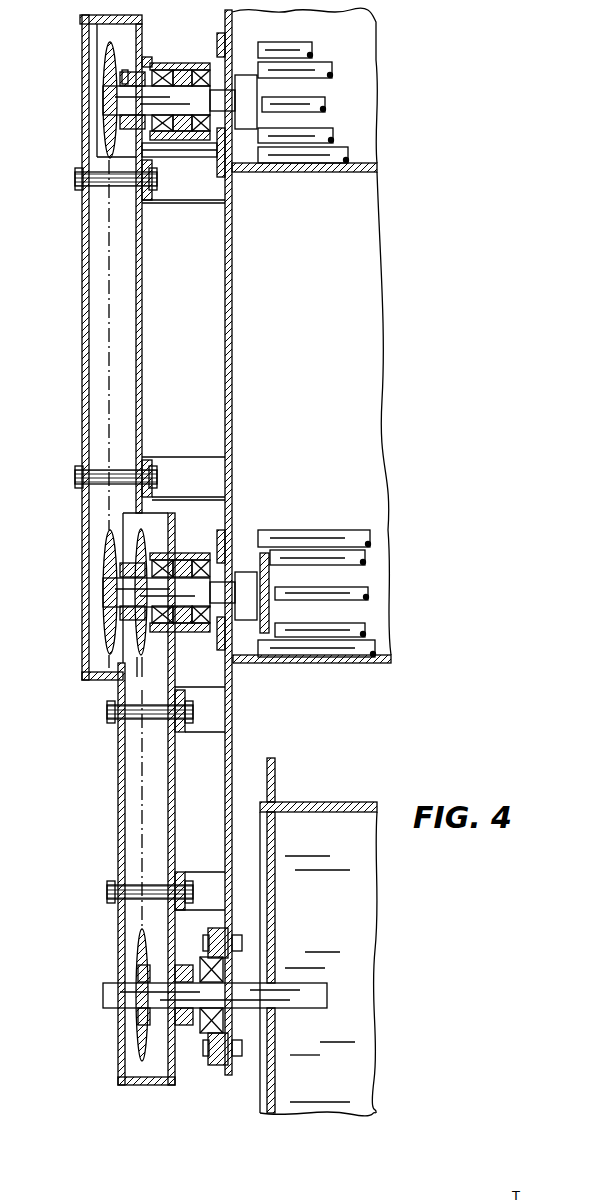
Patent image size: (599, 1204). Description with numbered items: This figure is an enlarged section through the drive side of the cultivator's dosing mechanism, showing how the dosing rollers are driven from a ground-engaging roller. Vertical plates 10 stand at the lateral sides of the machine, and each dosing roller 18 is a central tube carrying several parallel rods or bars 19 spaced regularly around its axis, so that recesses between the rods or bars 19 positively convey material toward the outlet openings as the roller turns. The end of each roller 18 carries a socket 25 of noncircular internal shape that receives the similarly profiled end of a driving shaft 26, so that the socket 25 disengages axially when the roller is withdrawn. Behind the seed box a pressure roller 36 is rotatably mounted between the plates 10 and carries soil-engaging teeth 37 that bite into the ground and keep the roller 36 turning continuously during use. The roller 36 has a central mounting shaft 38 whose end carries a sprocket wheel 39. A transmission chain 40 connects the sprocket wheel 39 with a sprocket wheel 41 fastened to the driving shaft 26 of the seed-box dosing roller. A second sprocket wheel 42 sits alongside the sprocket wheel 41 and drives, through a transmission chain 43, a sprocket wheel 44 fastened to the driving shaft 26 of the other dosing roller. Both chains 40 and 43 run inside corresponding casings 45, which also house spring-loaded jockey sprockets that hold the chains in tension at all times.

The vertical plate 10 is at (232, 258).
The dosing roller 18 is at (326, 57).
The rods or bars 19 is at (330, 131).
The socket 25 is at (244, 75).
The driving shaft 26 is at (103, 100).
The pressure roller 36 is at (340, 800).
The soil-engaging teeth 37 is at (273, 758).
The central mounting shaft 38 is at (322, 1000).
The sprocket wheel 39 is at (140, 1020).
The transmission chain 40 is at (140, 740).
The sprocket wheel 41 is at (147, 550).
The second sprocket wheel 42 is at (103, 547).
The transmission chain 43 is at (108, 305).
The sprocket wheel 44 is at (103, 62).
The casing 45 is at (82, 248).